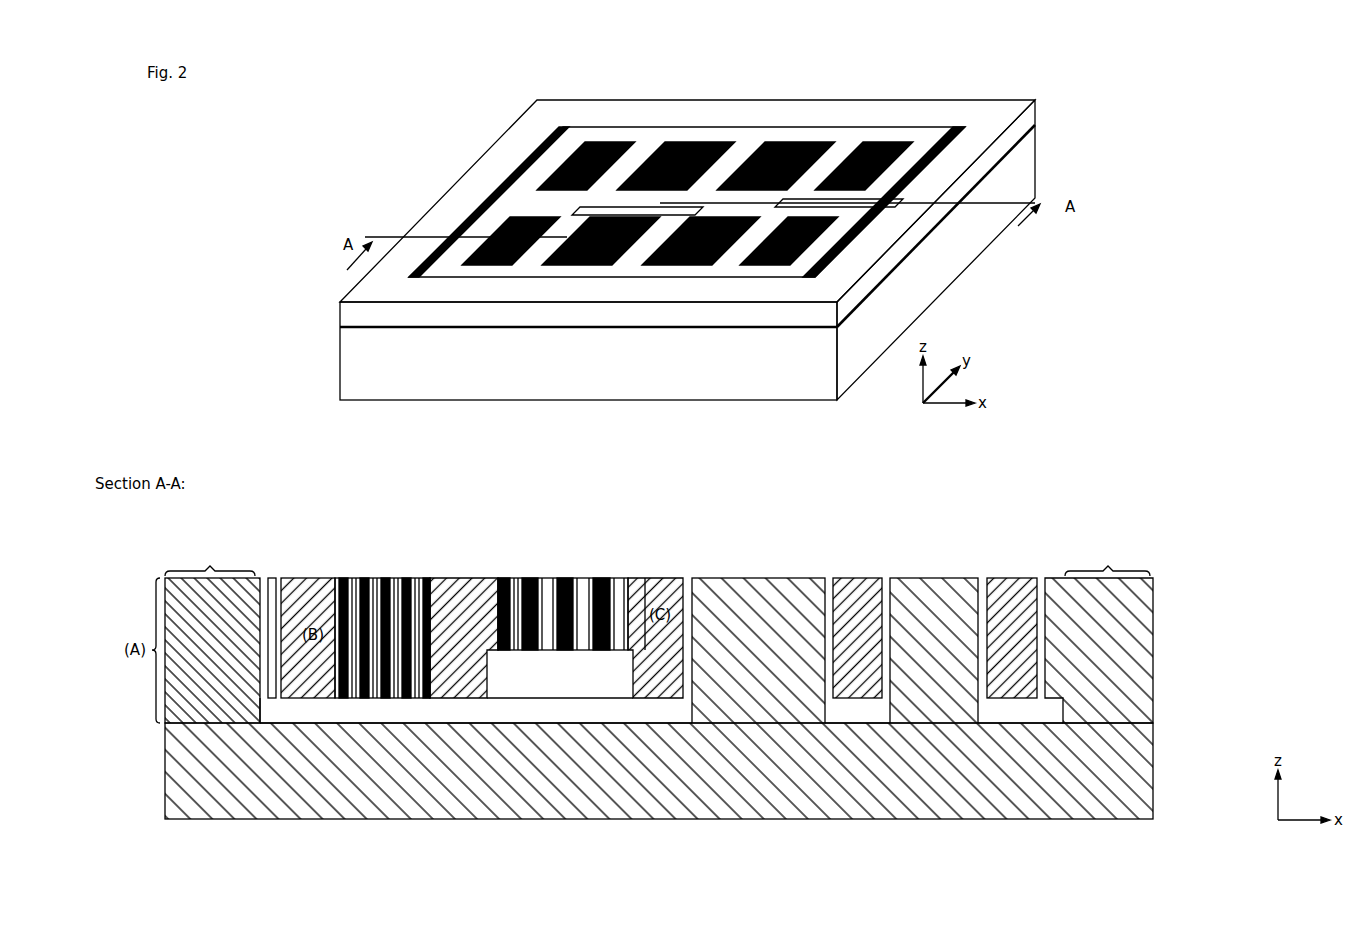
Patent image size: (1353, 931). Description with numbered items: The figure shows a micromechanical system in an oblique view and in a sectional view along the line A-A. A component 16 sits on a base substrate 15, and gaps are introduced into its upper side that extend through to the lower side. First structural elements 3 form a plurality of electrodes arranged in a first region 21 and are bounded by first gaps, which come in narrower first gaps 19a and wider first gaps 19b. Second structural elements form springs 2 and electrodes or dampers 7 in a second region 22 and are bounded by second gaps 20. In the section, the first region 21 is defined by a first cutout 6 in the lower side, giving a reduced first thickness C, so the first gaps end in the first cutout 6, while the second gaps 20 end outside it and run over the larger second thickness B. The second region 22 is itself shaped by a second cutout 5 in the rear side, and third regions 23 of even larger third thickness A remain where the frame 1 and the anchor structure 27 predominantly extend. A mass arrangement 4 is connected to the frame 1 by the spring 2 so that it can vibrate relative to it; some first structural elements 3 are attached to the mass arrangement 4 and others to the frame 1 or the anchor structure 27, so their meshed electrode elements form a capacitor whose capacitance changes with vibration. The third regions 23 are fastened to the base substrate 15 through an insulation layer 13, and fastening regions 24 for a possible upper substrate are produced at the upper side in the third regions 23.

The frame 1 is at (466, 211).
The spring 2 is at (543, 148).
The first structural elements 3 is at (700, 138).
The mass arrangement 4 is at (647, 145).
The second cutout 5 is at (328, 710).
The first cutout 6 is at (560, 682).
The electrodes or dampers 7 is at (602, 133).
The insulation layer 13 is at (1153, 722).
The base substrate 15 is at (920, 302).
The component 16 is at (1012, 133).
The narrower first gaps 19a is at (505, 578).
The wider first gaps 19b is at (503, 578).
The second gaps 20 is at (378, 578).
The first region 21 is at (487, 826).
The second region 22 is at (258, 826).
The third regions 23 is at (165, 826).
The fastening regions 24 is at (657, 560).
The anchor structure 27 is at (540, 203).